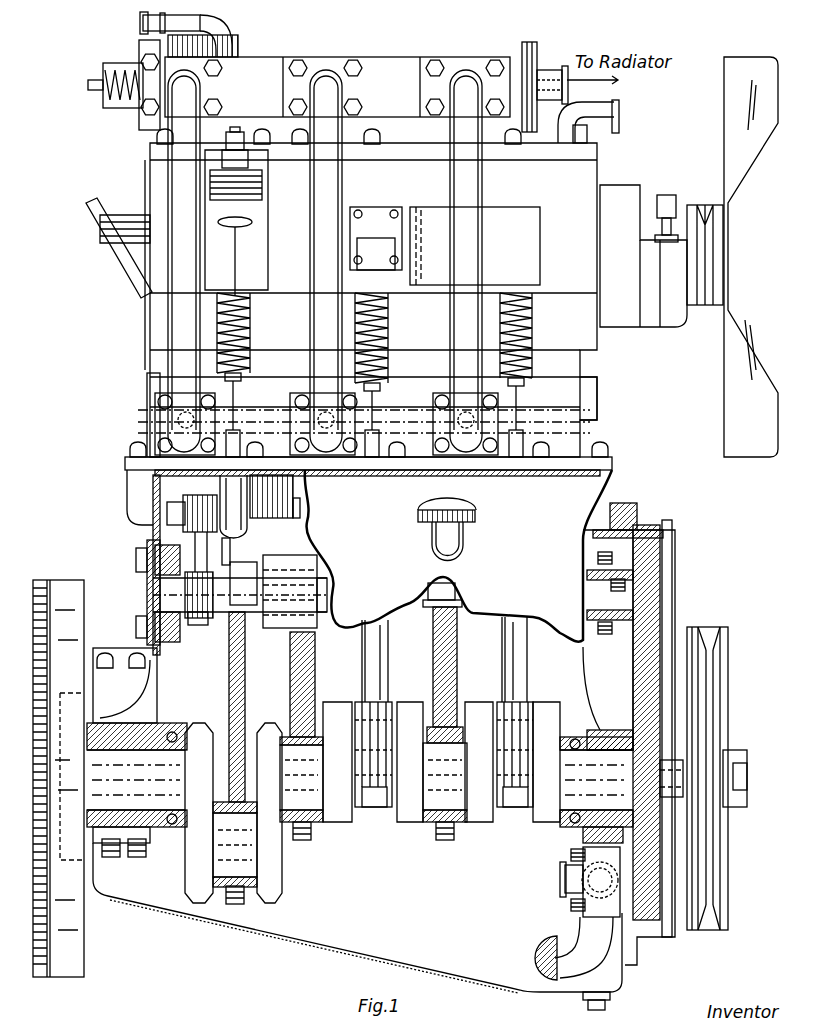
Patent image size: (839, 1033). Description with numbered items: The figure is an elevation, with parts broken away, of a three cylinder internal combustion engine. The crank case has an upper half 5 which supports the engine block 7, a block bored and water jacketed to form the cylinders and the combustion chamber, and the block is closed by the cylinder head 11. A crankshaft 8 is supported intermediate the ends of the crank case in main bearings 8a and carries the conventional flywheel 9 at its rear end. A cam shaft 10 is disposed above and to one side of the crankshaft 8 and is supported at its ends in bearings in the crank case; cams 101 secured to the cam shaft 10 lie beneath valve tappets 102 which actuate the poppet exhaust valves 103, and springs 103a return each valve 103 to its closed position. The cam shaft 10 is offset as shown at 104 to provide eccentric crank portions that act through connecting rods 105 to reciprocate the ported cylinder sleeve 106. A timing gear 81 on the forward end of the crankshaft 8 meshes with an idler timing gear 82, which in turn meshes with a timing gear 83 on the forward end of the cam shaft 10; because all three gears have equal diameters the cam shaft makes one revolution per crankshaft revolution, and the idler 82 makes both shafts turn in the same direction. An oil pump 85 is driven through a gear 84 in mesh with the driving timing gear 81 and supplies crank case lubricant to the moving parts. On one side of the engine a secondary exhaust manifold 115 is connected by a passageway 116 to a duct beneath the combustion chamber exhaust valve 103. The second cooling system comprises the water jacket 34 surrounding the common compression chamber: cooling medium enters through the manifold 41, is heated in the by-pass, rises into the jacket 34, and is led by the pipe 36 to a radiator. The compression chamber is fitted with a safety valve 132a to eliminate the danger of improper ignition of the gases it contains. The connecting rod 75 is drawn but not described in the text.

The safety valve 132a is at (118, 64).
The water jacket 34 is at (387, 76).
The pipe 36 is at (553, 70).
The cylinder head 11 is at (512, 150).
The passageway 116 is at (362, 263).
The secondary exhaust manifold 115 is at (525, 251).
The exhaust valve 103 is at (255, 256).
The springs 103a is at (251, 310).
The engine block 7 is at (583, 397).
The manifold 41 is at (590, 409).
The cylinder sleeve 106 is at (289, 481).
The upper half of crank case 5 is at (368, 556).
The connecting rods 105 is at (198, 546).
The valve tappets 102 is at (240, 531).
The cams 101 is at (243, 571).
The offset crank portion of cam shaft 104 is at (260, 605).
The flywheel 9 is at (70, 616).
The connecting rod 75 is at (246, 689).
The cam shaft 10 is at (592, 593).
The timing gear 83 is at (668, 557).
The idler timing gear 82 is at (662, 632).
The timing gear 81 is at (670, 747).
The crankshaft 8 is at (592, 779).
The main bearings 8a is at (142, 835).
The oil pump 85 is at (577, 928).
The gear 84 is at (659, 937).